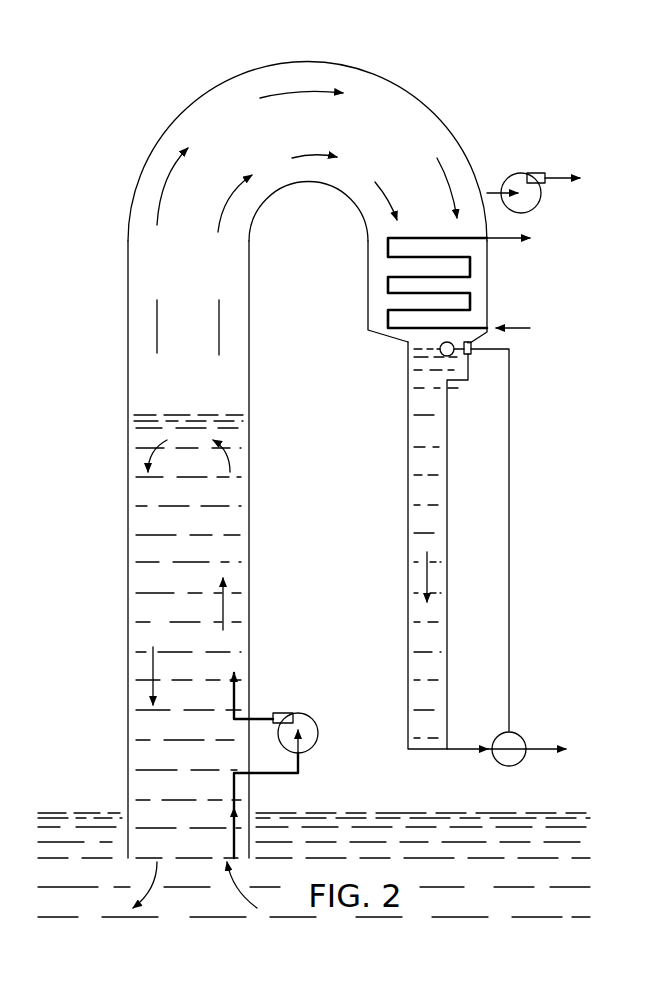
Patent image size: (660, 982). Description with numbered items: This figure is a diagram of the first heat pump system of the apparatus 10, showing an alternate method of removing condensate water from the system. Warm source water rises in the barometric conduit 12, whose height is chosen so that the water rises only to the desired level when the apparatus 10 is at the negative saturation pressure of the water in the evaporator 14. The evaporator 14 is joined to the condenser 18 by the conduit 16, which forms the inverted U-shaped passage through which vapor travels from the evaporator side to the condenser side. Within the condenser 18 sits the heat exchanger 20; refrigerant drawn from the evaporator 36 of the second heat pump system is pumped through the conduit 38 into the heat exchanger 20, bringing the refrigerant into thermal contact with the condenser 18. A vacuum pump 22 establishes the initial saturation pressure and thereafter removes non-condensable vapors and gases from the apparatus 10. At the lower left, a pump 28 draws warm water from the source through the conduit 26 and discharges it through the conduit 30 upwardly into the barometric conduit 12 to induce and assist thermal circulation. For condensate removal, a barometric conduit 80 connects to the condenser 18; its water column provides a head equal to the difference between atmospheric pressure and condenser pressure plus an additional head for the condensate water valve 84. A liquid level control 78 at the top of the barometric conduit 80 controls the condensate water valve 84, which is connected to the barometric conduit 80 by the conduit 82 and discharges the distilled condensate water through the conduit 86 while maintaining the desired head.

The apparatus 10 is at (468, 73).
The barometric conduit 12 is at (128, 536).
The evaporator 14 is at (249, 412).
The conduit 16 is at (153, 150).
The condenser 18 is at (368, 258).
The heat exchanger 20 is at (388, 312).
The vacuum pump 22 is at (524, 173).
The conduit 26 is at (290, 774).
The pump 28 is at (312, 716).
The conduit 30 is at (261, 719).
The evaporator 36 is at (509, 240).
The conduit 38 is at (523, 326).
The liquid level control 78 is at (470, 354).
The barometric conduit 80 is at (408, 510).
The conduit 82 is at (466, 748).
The condensate water valve 84 is at (518, 736).
The conduit 86 is at (549, 758).